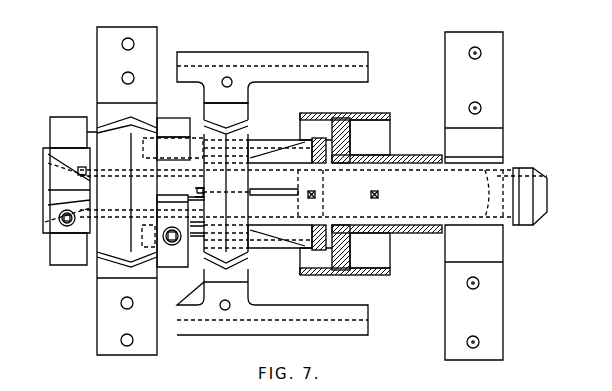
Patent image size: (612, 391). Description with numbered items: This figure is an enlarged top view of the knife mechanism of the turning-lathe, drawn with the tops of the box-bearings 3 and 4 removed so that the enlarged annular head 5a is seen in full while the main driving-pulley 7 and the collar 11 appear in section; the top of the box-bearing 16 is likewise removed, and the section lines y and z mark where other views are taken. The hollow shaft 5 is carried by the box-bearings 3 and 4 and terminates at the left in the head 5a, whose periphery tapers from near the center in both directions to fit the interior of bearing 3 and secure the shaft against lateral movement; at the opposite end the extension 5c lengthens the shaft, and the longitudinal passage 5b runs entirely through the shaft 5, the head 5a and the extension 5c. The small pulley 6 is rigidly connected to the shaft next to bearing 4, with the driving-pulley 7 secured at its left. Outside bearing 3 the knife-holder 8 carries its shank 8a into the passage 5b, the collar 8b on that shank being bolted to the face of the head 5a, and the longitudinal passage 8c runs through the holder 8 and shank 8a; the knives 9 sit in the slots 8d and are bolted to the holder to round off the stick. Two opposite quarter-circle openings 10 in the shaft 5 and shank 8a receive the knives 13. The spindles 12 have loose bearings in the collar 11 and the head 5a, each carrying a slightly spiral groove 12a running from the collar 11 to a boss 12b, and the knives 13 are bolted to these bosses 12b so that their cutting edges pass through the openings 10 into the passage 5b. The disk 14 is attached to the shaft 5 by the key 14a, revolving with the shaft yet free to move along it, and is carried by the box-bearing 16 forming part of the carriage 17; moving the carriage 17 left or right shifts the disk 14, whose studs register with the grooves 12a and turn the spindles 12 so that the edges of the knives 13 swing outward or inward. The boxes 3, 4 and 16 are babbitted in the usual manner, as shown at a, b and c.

The box-bearing 3 is at (115, 191).
The box-bearing 4 is at (474, 196).
The hollow shaft 5 is at (326, 196).
The enlarged annular head 5a is at (142, 192).
The longitudinal passage 5b is at (474, 193).
The extension 5c is at (542, 195).
The small pulley 6 is at (413, 154).
The main driving-pulley 7 is at (380, 104).
The knife-holder 8 is at (44, 163).
The shank 8a is at (129, 234).
The collar 8b is at (90, 237).
The longitudinal passage 8c is at (123, 208).
The slots 8d is at (56, 184).
The knives 9 is at (62, 275).
The openings 10 is at (192, 193).
The collar 11 is at (321, 139).
The spindles 12 is at (285, 146).
The spiral groove 12a is at (265, 148).
The boss 12b is at (173, 148).
The knives 13 is at (173, 192).
The disk 14 is at (226, 208).
The key 14a is at (289, 187).
The box-bearing 16 is at (226, 118).
The carriage 17 is at (303, 43).
The babbitt lining a is at (112, 122).
The babbitt lining b is at (472, 162).
The babbitt lining c is at (245, 124).
The section line y- y is at (191, 108).
The section line z- z is at (224, 45).